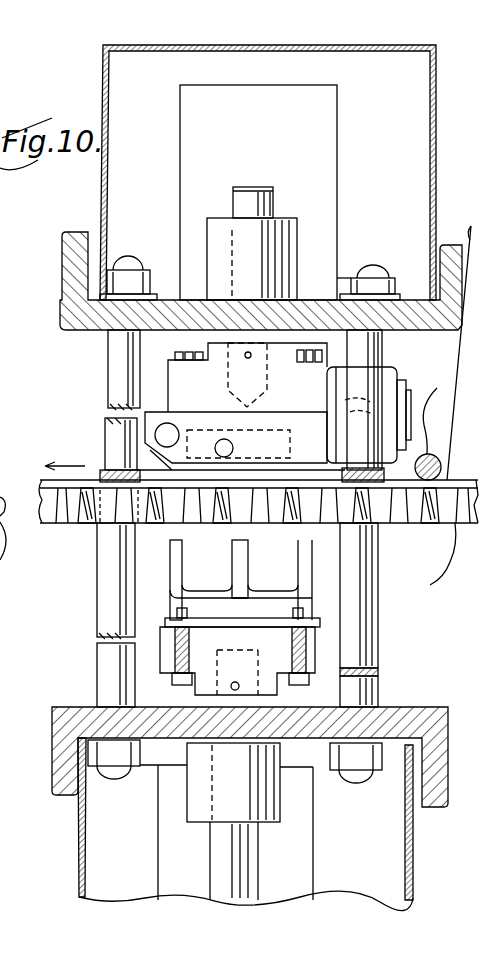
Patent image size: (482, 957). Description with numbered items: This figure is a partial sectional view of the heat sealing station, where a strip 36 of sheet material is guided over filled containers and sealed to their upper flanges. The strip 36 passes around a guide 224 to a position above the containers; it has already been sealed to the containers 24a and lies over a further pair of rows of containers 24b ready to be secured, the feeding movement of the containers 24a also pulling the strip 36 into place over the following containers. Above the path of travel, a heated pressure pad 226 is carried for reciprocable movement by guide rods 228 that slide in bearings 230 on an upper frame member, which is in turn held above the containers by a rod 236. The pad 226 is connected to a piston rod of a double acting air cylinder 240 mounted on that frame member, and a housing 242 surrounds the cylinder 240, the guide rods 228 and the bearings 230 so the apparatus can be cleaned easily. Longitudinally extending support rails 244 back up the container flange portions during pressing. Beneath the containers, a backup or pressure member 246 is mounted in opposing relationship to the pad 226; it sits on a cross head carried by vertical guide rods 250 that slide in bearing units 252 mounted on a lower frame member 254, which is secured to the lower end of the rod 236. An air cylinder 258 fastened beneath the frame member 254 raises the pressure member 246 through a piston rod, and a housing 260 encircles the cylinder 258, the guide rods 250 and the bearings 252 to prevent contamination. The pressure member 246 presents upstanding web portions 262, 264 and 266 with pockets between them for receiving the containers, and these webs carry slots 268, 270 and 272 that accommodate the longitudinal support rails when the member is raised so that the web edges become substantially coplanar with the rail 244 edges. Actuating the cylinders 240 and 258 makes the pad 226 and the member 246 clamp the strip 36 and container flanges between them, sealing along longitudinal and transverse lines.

The housing 242 is at (100, 197).
The double acting air cylinder 240 is at (197, 149).
The bearings 230 is at (282, 248).
The strip of sheet material 36 is at (462, 338).
The rod 236 is at (110, 342).
The guide rods 228 is at (295, 348).
The guide 224 is at (437, 419).
The heated pressure pad 226 is at (145, 452).
The containers 24b is at (241, 441).
The containers 24a is at (120, 511).
The slot 272 is at (380, 552).
The support rails 244 is at (458, 606).
The web portion 262 is at (170, 562).
The slot 268 is at (172, 572).
The slot 270 is at (380, 558).
The web portion 266 is at (303, 590).
The pressure member 246 is at (307, 610).
The web portion 264 is at (237, 651).
The frame member 254 is at (67, 720).
The housing 260 is at (78, 836).
The air cylinder 258 is at (175, 872).
The bearing units 252 is at (267, 798).
The vertical guide rods 250 is at (243, 860).